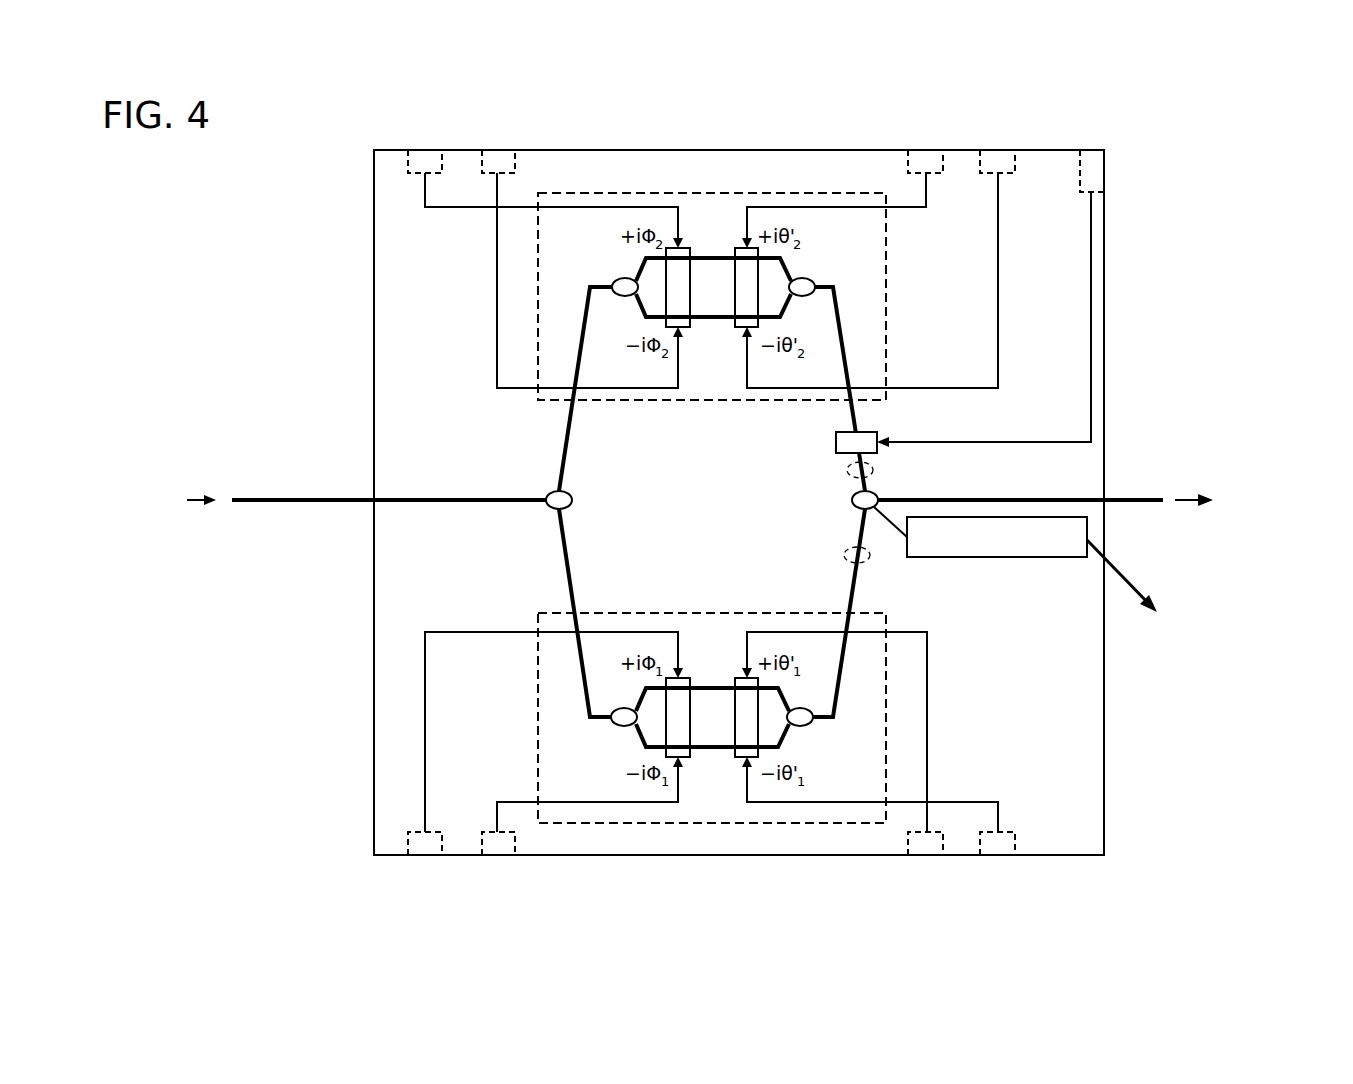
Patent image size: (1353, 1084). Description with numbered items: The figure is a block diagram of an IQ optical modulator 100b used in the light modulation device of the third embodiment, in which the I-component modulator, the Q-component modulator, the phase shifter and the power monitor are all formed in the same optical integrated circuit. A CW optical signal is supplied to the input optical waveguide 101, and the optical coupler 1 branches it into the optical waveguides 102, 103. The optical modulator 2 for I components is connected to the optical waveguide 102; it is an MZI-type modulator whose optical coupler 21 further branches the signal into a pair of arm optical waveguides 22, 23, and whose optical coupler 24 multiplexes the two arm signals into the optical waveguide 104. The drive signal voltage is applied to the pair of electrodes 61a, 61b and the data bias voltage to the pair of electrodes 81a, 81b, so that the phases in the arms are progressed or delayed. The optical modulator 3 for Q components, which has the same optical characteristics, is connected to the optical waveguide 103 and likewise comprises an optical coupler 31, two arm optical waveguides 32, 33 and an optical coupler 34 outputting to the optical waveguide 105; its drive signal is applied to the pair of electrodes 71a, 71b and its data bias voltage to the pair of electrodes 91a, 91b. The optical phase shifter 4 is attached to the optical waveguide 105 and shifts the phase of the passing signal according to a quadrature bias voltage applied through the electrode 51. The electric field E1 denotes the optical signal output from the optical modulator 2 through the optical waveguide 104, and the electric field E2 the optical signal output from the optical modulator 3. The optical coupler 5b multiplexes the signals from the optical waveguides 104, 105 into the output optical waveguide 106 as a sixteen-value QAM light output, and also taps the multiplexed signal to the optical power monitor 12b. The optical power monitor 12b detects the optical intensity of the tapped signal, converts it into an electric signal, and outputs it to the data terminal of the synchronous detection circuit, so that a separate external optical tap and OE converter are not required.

The optical coupler 1 is at (573, 500).
The optical modulator 2 is at (716, 613).
The optical modulator 3 is at (712, 193).
The optical phase shifter 4 is at (838, 432).
The optical coupler 5b is at (851, 501).
The optical power monitor 12b is at (1000, 560).
The optical coupler 21 is at (612, 723).
The optical waveguide 22 is at (632, 696).
The optical waveguide 23 is at (632, 738).
The optical coupler 24 is at (807, 726).
The optical coupler 31 is at (612, 283).
The optical waveguide 32 is at (632, 266).
The optical waveguide 33 is at (632, 300).
The optical coupler 34 is at (815, 278).
The electrode 51 is at (1105, 166).
The electrode 61a is at (428, 858).
The electrode 61b is at (502, 858).
The electrode 71a is at (430, 148).
The electrode 71b is at (503, 148).
The electrode 81a is at (928, 858).
The electrode 81b is at (1003, 858).
The electrode 91a is at (930, 148).
The electrode 91b is at (1003, 148).
The IQ optical modulator 100b is at (708, 150).
The input optical waveguide 101 is at (285, 502).
The optical waveguide 102 is at (572, 555).
The optical waveguide 103 is at (572, 440).
The optical waveguide 104 is at (855, 588).
The optical waveguide 105 is at (877, 435).
The output optical waveguide 106 is at (1143, 502).
The electric field E1 is at (843, 553).
The electric field E2 is at (873, 470).